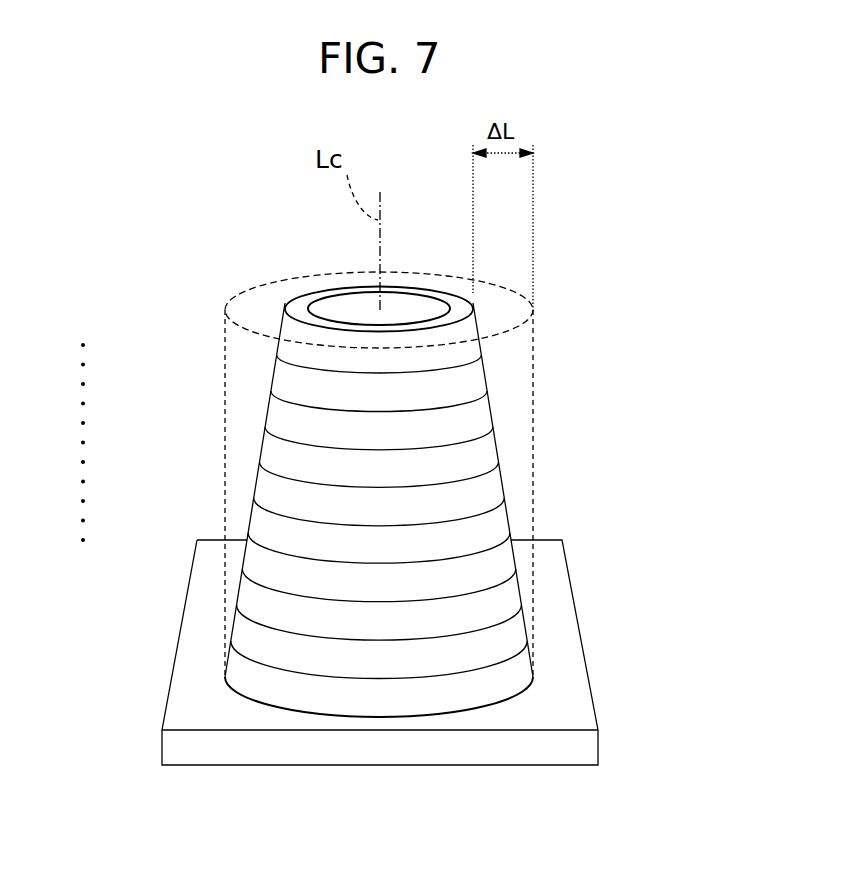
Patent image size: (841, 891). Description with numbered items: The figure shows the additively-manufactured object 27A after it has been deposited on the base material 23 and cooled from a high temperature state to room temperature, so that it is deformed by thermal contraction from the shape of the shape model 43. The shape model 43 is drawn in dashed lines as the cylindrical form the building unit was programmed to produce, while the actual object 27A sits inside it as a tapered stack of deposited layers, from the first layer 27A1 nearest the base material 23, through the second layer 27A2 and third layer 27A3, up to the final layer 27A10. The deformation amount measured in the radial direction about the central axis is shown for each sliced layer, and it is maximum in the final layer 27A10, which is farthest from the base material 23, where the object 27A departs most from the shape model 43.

The base material 23 is at (578, 697).
The shape model 43 is at (237, 292).
The additively-manufactured object 27A is at (293, 447).
The first layer 27A1 is at (243, 672).
The second layer 27A2 is at (253, 637).
The third layer 27A3 is at (255, 597).
The final layer 27A10 is at (298, 355).